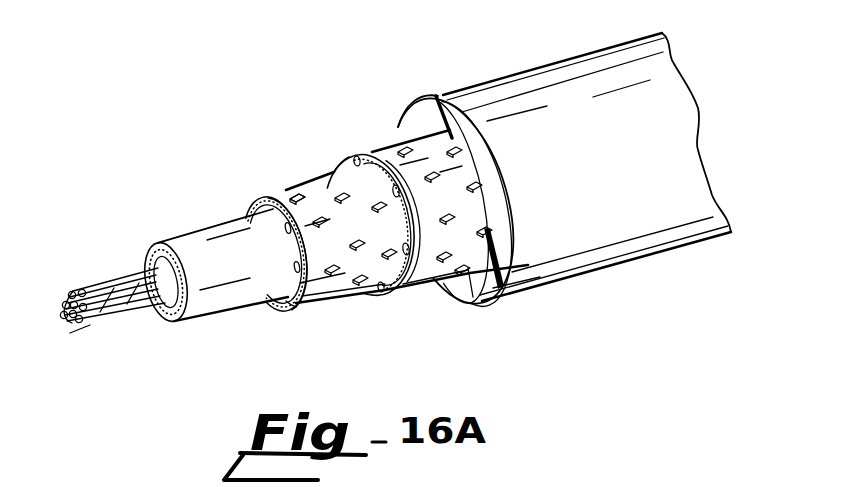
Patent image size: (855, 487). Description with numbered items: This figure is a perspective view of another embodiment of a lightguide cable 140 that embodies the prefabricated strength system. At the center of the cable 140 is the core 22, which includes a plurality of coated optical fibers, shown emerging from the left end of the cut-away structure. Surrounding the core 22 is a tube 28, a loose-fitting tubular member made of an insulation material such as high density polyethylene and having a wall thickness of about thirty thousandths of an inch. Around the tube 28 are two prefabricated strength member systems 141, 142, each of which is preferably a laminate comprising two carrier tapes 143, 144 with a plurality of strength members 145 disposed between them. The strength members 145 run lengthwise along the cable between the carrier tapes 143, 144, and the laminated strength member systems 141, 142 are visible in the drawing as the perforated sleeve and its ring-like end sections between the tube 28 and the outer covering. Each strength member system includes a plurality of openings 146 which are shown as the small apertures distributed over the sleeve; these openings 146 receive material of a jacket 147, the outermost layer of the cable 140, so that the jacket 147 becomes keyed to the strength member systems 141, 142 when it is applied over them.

The core 22 is at (116, 262).
The tube 28 is at (192, 236).
The cable 140 is at (597, 286).
The prefabricated strength member system 141 is at (294, 311).
The prefabricated strength member system 142 is at (371, 309).
The carrier tape 143 is at (288, 194).
The carrier tape 144 is at (320, 198).
The strength members 145 is at (275, 305).
The openings 146 is at (300, 192).
The jacket 147 is at (438, 96).